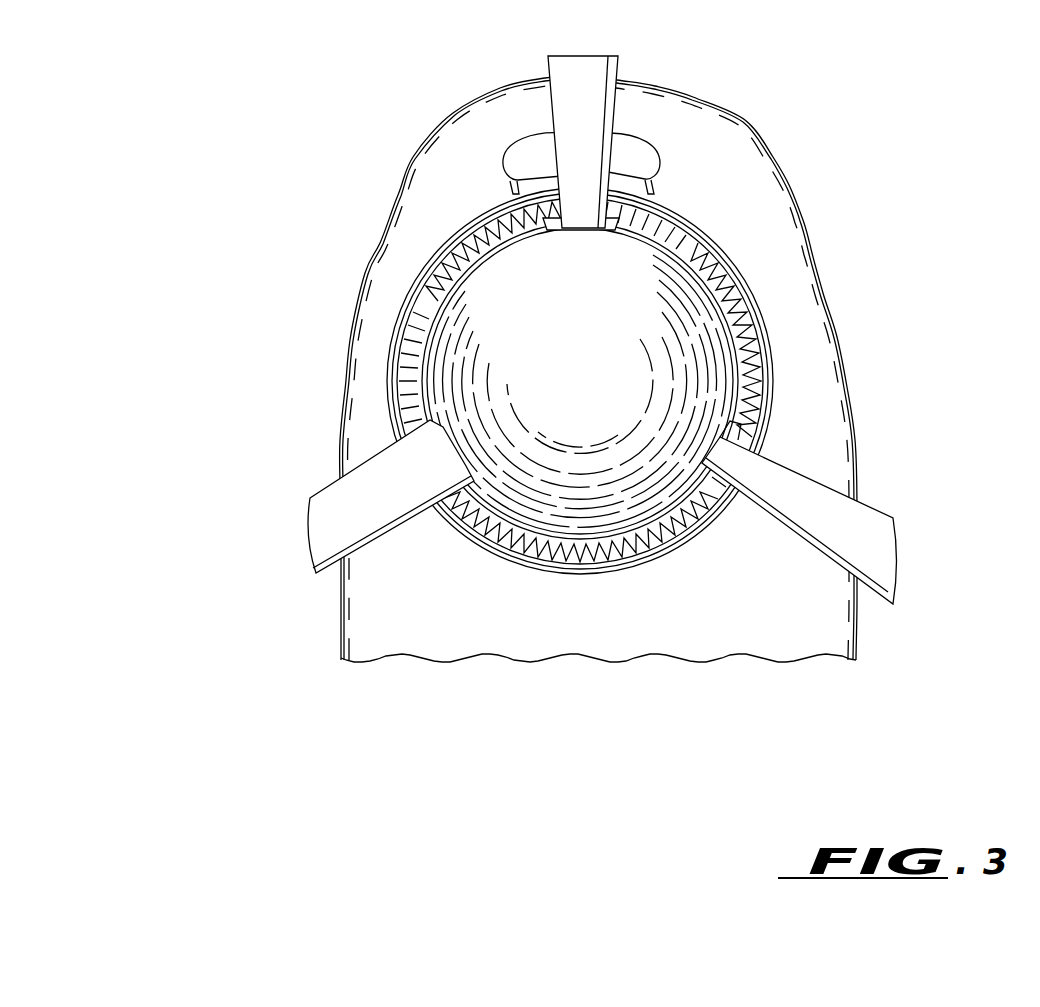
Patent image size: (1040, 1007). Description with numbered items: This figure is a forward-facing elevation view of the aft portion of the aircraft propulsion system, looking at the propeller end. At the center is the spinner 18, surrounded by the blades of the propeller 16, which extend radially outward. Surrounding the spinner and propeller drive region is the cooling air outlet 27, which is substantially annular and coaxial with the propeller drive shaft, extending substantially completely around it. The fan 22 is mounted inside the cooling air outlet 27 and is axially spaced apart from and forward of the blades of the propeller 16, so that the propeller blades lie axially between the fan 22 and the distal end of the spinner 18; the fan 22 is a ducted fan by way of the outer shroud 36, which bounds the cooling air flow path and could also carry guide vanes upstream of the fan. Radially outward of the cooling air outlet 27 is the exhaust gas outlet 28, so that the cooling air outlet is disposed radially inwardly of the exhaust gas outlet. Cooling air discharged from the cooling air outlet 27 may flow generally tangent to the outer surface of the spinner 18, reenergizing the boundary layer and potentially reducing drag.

The propeller 16 is at (308, 553).
The spinner 18 is at (580, 472).
The fan 22 is at (410, 382).
The cooling air outlet 27 is at (740, 283).
The exhaust gas outlet 28 is at (527, 150).
The outer shroud 36 is at (410, 298).